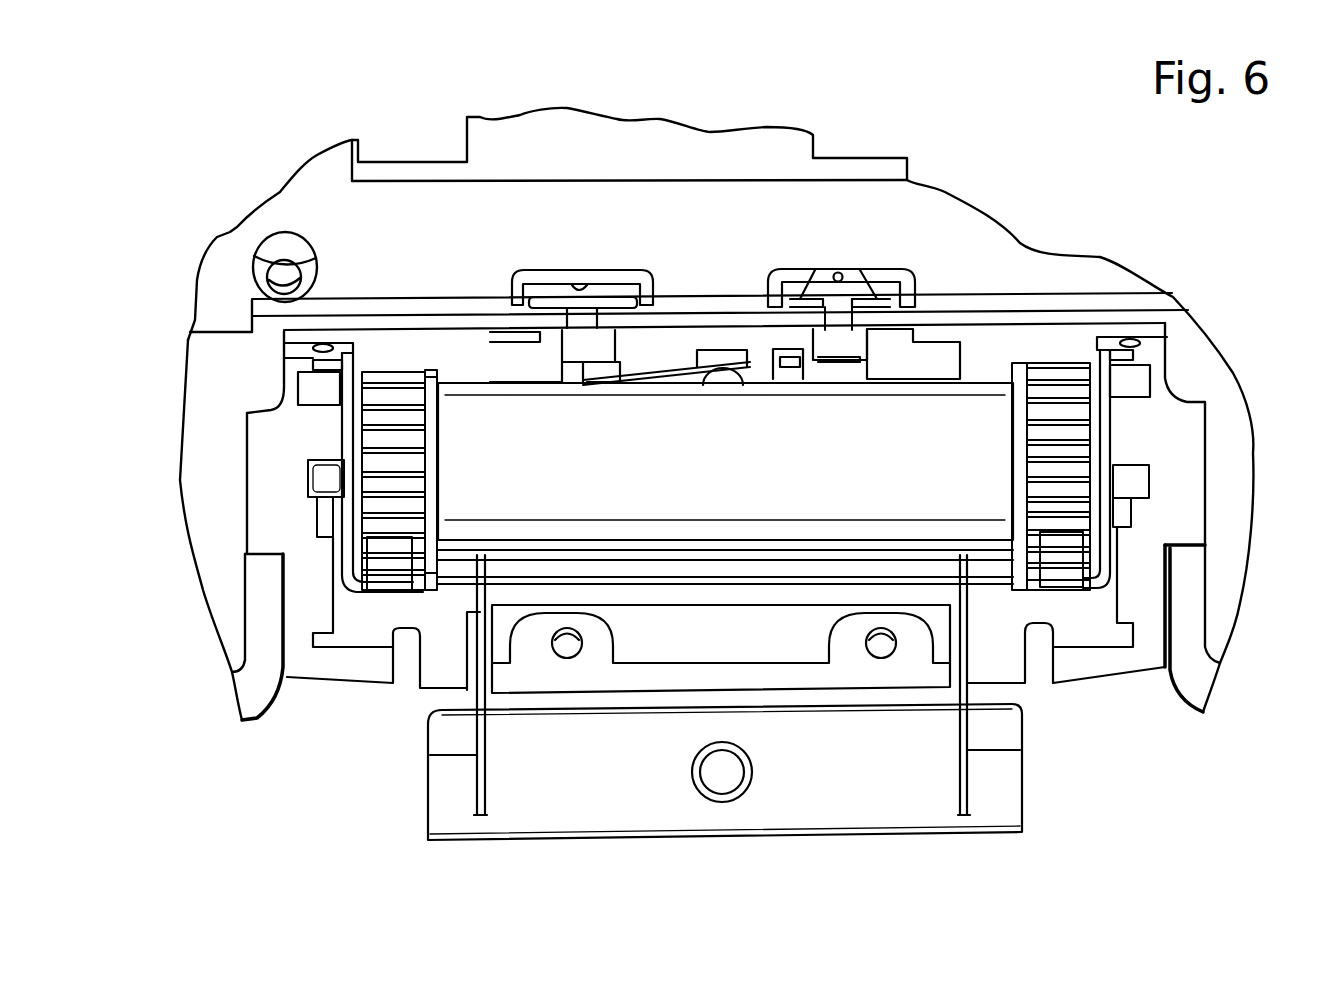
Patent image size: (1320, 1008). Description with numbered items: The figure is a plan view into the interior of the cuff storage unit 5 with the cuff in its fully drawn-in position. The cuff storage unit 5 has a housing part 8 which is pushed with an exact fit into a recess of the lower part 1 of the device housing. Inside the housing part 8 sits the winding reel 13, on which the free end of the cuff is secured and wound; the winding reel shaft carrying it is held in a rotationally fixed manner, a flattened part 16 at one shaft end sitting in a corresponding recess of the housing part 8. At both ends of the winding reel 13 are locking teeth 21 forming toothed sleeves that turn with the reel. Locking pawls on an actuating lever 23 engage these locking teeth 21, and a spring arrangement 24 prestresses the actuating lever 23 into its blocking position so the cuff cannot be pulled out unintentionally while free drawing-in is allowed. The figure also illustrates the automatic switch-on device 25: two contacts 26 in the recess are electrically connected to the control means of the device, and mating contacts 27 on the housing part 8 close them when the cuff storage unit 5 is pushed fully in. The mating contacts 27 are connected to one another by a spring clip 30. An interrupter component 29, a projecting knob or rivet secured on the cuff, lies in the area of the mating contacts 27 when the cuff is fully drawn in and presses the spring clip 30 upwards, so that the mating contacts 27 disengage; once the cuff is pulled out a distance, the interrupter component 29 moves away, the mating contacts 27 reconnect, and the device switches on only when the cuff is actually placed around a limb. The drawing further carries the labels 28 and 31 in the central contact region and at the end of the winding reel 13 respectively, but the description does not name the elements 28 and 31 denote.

The lower part 1 is at (434, 226).
The cuff storage unit 5 is at (1200, 288).
The housing part 8 is at (318, 682).
The winding reel 13 is at (657, 528).
The flattened part 16 is at (322, 480).
The locking teeth 21 is at (412, 467).
The actuating lever 23 is at (597, 803).
The spring arrangement 24 is at (722, 800).
The automatic switch-on device 25 is at (848, 264).
The contacts 26 is at (556, 300).
The mating contacts 27 is at (600, 355).
The actuating element 28 is at (717, 338).
The interrupter component 29 is at (718, 383).
The spring clip 30 is at (760, 370).
The bearing 31 is at (1041, 505).